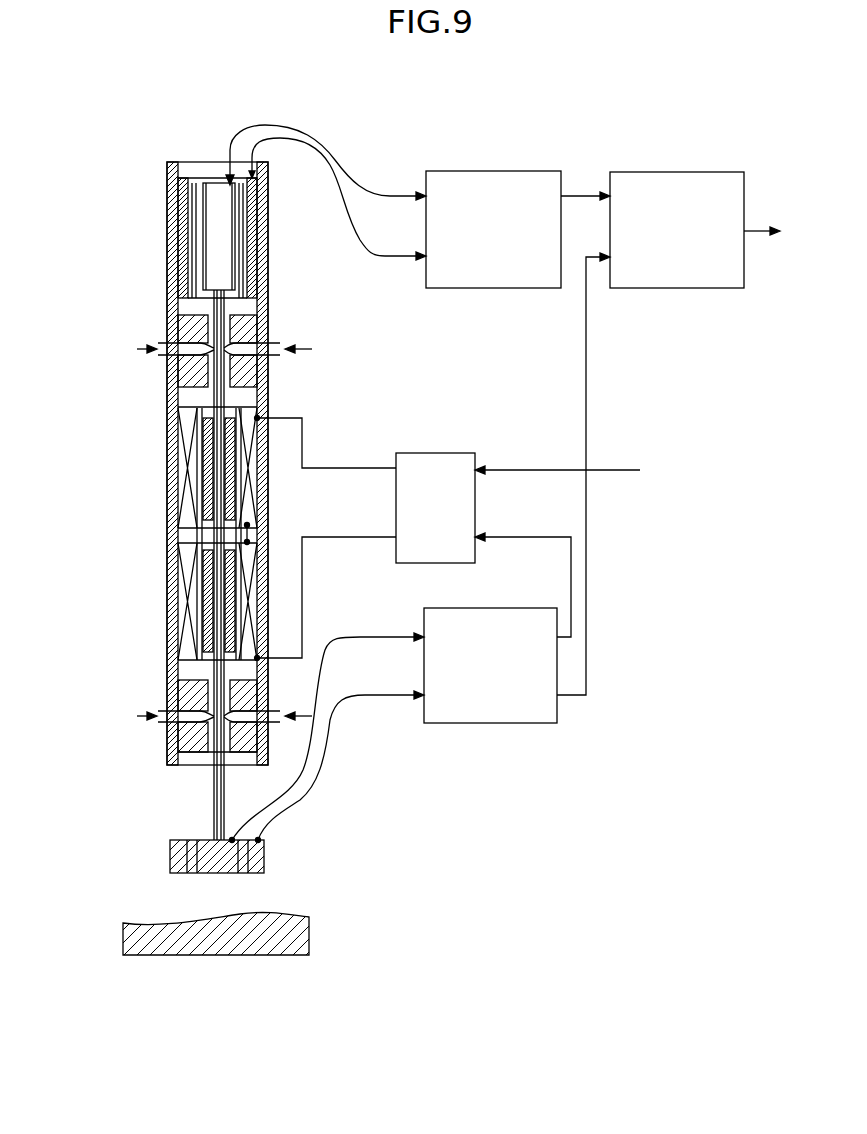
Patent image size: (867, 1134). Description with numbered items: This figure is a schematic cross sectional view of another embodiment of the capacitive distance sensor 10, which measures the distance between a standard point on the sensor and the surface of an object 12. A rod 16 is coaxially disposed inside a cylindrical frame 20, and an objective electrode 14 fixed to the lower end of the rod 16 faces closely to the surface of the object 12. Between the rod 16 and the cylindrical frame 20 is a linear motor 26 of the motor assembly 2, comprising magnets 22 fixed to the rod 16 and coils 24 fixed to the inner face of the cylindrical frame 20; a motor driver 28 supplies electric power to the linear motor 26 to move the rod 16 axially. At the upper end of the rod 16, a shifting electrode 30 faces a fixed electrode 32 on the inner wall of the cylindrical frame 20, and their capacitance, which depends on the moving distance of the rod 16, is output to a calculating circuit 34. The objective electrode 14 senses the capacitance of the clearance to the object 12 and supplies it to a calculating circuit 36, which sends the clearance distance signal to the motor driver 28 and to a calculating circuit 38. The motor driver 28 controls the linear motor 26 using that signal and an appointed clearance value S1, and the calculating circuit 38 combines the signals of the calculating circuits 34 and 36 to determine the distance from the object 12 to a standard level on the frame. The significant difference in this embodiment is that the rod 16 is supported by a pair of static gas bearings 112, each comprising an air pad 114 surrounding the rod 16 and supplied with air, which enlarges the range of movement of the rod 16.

The capacitive distance sensor 10 is at (118, 153).
The linear motor 2 is at (333, 390).
The object 12 is at (290, 923).
The objective electrode 14 is at (265, 858).
The rod 16 is at (215, 816).
The cylindrical frame 20 is at (173, 235).
The magnet 22 is at (207, 425).
The coil 24 is at (178, 468).
The linear motor 26 is at (140, 472).
The motor driver 28 is at (443, 453).
The shifting electrode 30 is at (212, 187).
The fixed electrode 32 is at (178, 162).
The calculating circuit 34 is at (450, 171).
The calculating circuit 36 is at (440, 723).
The calculating circuit 38 is at (637, 172).
The static gas bearing 112 is at (150, 320).
The air pad 114 is at (250, 330).
The appointed value S1 is at (618, 470).